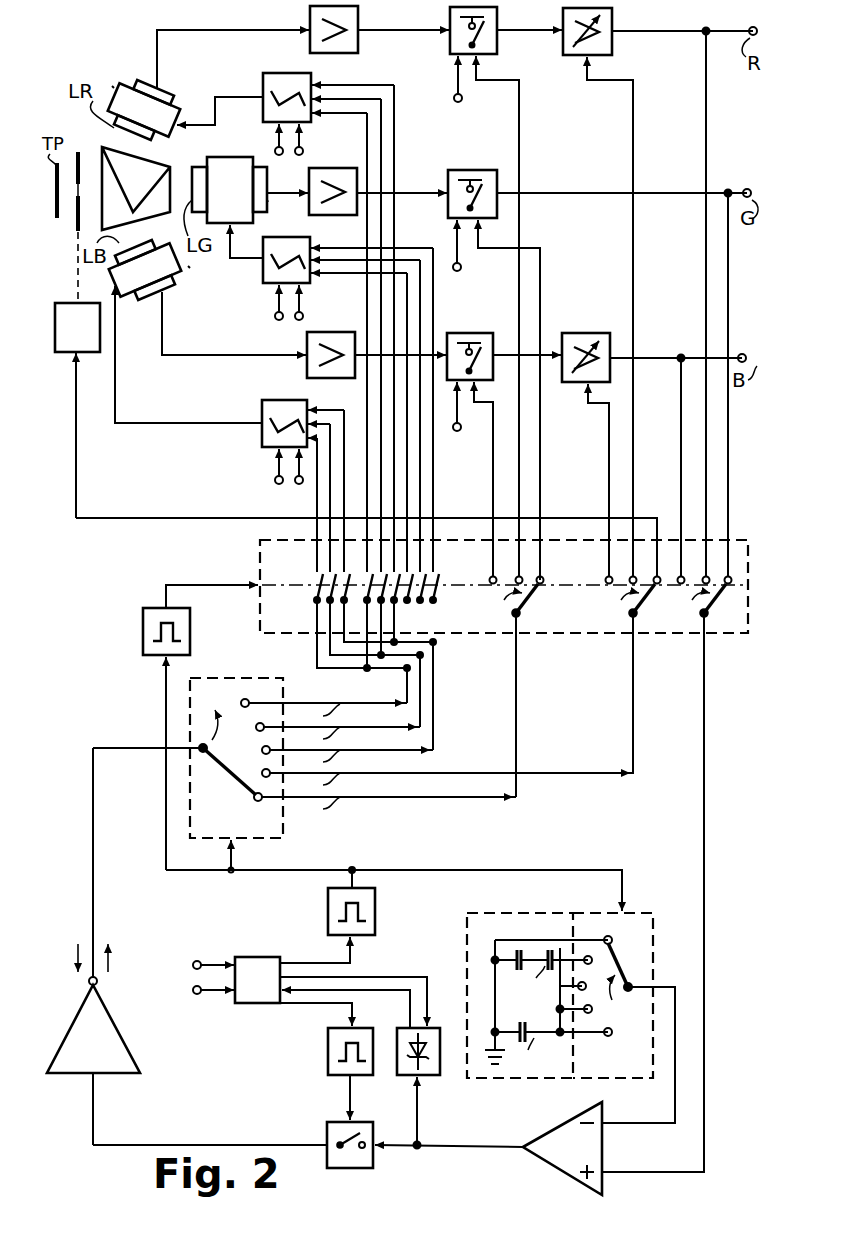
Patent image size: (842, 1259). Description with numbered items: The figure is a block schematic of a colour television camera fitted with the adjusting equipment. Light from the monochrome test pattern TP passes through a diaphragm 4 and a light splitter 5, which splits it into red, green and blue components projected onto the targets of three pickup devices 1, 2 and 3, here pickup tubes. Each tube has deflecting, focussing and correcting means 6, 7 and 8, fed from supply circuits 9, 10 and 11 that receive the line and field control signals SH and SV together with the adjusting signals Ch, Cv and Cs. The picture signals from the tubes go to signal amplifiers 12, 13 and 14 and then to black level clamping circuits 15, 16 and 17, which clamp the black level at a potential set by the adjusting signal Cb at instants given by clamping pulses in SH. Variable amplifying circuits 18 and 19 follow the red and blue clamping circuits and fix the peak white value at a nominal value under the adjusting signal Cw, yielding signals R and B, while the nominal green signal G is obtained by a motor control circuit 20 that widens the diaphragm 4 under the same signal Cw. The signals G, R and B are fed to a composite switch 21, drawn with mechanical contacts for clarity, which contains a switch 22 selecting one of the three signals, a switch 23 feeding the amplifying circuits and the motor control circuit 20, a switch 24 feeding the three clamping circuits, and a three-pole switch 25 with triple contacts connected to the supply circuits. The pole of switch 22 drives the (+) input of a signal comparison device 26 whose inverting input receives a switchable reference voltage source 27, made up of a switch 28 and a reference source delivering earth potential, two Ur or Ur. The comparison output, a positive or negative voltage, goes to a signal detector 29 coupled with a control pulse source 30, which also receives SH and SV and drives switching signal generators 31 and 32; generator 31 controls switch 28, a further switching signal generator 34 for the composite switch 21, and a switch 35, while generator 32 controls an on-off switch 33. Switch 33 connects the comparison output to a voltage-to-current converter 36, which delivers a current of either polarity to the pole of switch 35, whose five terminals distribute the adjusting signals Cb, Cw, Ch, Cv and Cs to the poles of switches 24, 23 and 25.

The pickup device 1 is at (140, 80).
The pickup device 2 is at (268, 202).
The pickup device 3 is at (140, 303).
The diaphragm 4 is at (78, 232).
The light splitter 5 is at (103, 148).
The deflecting, focussing and correcting means 6 is at (113, 86).
The deflecting, focussing and correcting means 7 is at (228, 158).
The deflecting, focussing and correcting means 8 is at (190, 268).
The supply circuit 9 is at (298, 73).
The supply circuit 10 is at (302, 238).
The supply circuit 11 is at (292, 400).
The signal amplifier 12 is at (310, 21).
The signal amplifier 13 is at (324, 168).
The signal amplifier 14 is at (307, 340).
The black level clamping circuit 15 is at (450, 45).
The black level clamping circuit 16 is at (462, 170).
The black level clamping circuit 17 is at (488, 333).
The variable amplifying circuit 18 is at (563, 45).
The variable amplifying circuit 19 is at (574, 383).
The motor control circuit 20 is at (62, 352).
The composite switch 21 is at (260, 566).
The switch 22 is at (702, 613).
The switch 23 is at (630, 613).
The switch 24 is at (513, 611).
The switch 25 is at (310, 592).
The signal comparison device 26 is at (603, 1147).
The switchable reference voltage source 27 is at (572, 1080).
The switch 28 is at (653, 914).
The signal detector 29 is at (431, 1076).
The control pulse source 30 is at (266, 957).
The switching signal generator 31 is at (328, 910).
The switching signal generator 32 is at (328, 1052).
The on-off switch 33 is at (373, 1160).
The switching signal generator 34 is at (143, 641).
The switch 35 is at (284, 834).
The voltage-to-current converter 36 is at (62, 1074).